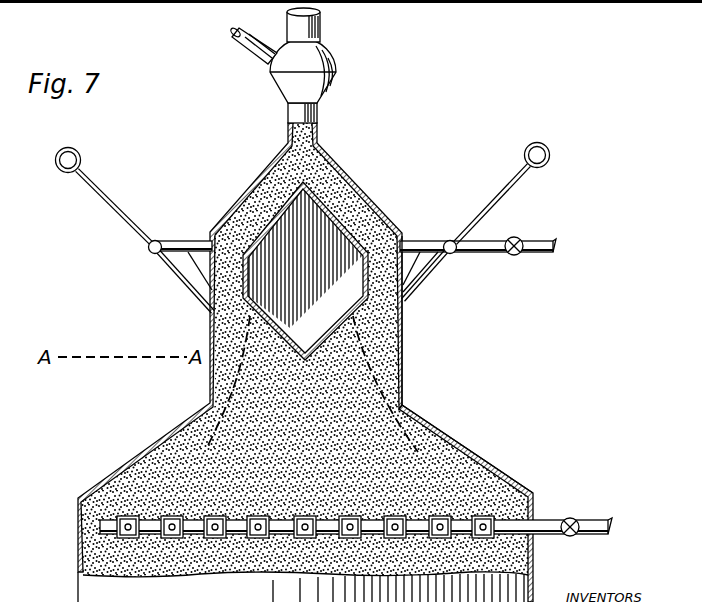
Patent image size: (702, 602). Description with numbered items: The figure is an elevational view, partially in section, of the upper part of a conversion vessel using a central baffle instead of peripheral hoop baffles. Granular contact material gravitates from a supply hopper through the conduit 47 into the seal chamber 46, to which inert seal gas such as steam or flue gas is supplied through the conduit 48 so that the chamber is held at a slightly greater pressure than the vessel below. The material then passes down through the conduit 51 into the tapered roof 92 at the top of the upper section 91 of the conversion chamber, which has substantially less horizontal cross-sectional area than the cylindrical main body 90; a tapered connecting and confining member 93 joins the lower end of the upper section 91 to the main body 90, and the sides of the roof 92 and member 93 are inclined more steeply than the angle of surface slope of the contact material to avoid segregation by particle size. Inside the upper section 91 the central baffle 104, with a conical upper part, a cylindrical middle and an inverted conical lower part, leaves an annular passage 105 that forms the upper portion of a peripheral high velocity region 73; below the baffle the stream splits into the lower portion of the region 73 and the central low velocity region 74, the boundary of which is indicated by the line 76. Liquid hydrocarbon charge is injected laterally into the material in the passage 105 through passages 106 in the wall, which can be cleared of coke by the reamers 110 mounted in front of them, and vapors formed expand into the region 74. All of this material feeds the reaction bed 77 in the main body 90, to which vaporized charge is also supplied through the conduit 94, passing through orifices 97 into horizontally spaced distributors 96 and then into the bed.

The conduit 47 is at (320, 27).
The conduit 48 is at (243, 44).
The seal chamber 46 is at (333, 90).
The conduit 51 is at (318, 117).
The tapered roof 92 is at (347, 179).
The annular passage 105 is at (393, 230).
The reamer 110 is at (505, 192).
The passages 106 is at (428, 262).
The central baffle 104 is at (331, 318).
The upper section 91 is at (404, 359).
The central low velocity region 74 is at (363, 389).
The line 76 is at (241, 371).
The peripheral high velocity region 73 is at (228, 390).
The tapered connecting and confining member 93 is at (438, 438).
The reaction bed 77 is at (495, 467).
The orifices 97 is at (173, 516).
The distributors 96 is at (348, 517).
The conduit 94 is at (598, 512).
The cylindrical main body 90 is at (538, 582).